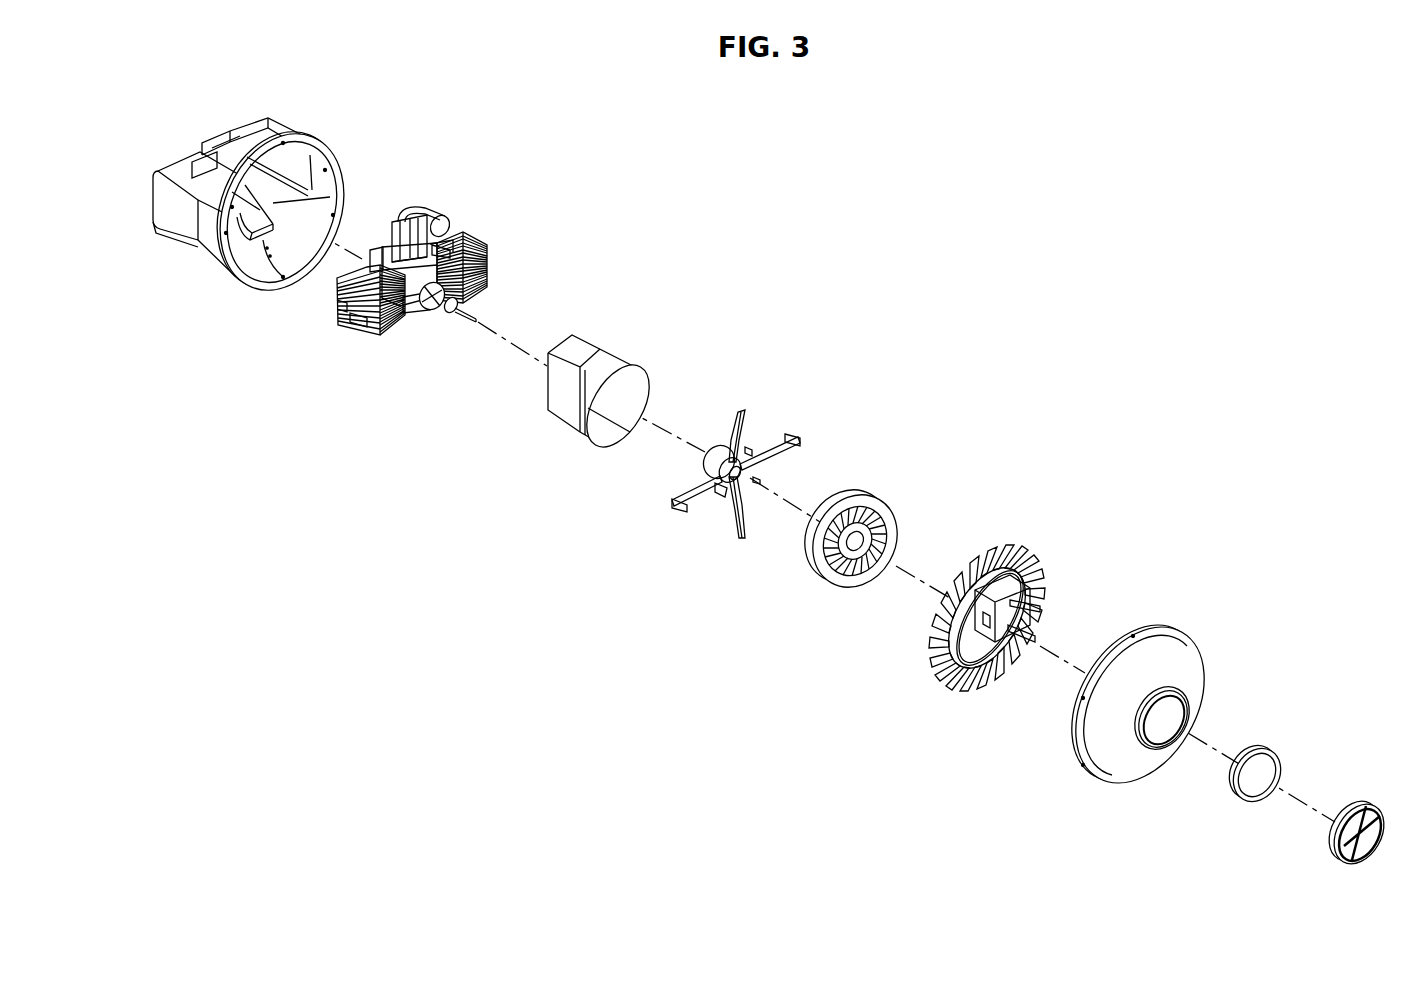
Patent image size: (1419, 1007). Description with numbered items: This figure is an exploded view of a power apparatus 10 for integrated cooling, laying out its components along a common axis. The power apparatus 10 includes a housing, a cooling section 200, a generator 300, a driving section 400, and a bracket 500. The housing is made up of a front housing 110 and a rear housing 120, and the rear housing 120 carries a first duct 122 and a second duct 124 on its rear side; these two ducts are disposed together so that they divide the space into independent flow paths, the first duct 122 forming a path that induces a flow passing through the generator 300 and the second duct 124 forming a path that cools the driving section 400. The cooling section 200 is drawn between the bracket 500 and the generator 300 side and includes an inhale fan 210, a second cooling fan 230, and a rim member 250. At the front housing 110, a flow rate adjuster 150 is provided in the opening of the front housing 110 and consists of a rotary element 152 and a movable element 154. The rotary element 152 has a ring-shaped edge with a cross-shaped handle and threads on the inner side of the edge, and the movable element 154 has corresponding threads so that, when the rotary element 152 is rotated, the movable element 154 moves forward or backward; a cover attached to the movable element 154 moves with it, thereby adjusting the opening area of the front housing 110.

The power apparatus for integrated cooling 10 is at (782, 109).
The front housing 110 is at (1178, 653).
The rear housing 120 is at (246, 505).
The first duct 122 is at (563, 390).
The second duct 124 is at (183, 218).
The flow rate adjuster 150 is at (1245, 670).
The rotary element 152 is at (1352, 805).
The movable element 154 is at (1262, 748).
The cooling section 200 is at (1000, 560).
The inhale fan 210 is at (1017, 665).
The second cooling fan 230 is at (935, 650).
The rim member 250 is at (970, 672).
The generator 300 is at (862, 492).
The driving section 400 is at (401, 217).
The bracket 500 is at (737, 412).